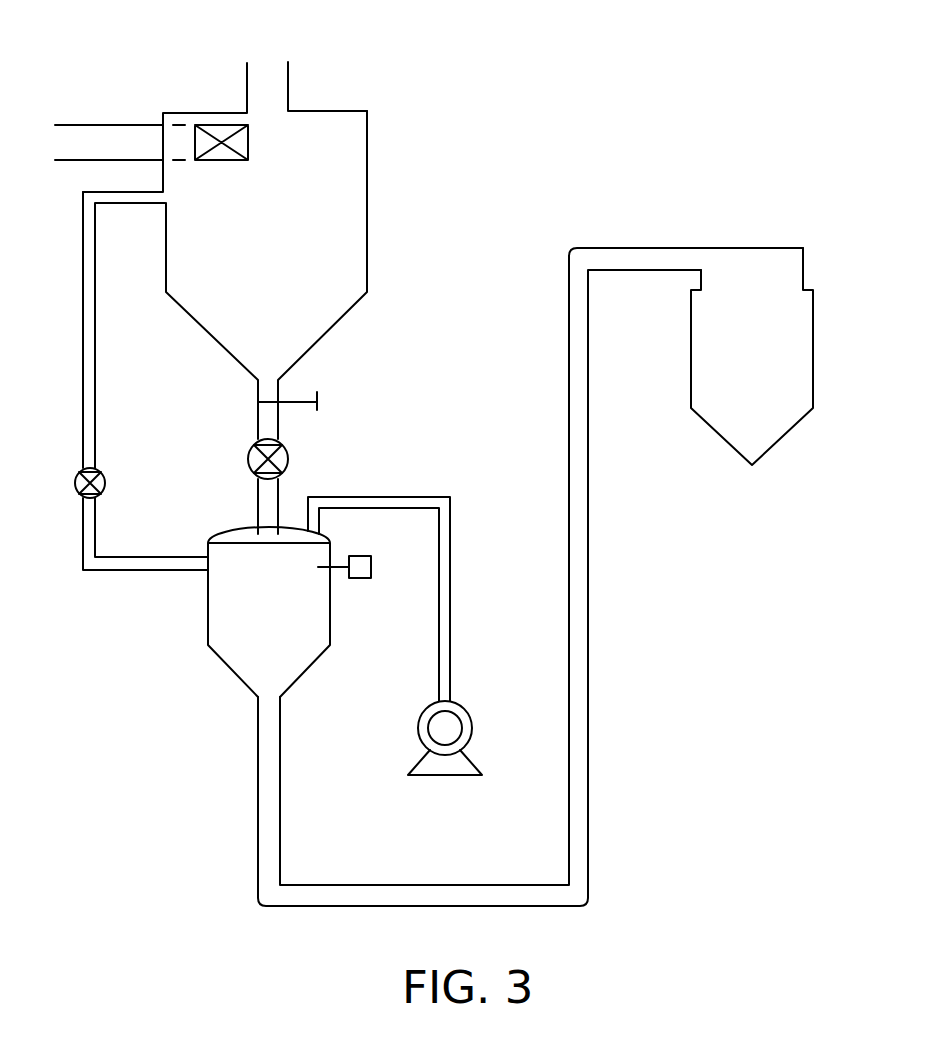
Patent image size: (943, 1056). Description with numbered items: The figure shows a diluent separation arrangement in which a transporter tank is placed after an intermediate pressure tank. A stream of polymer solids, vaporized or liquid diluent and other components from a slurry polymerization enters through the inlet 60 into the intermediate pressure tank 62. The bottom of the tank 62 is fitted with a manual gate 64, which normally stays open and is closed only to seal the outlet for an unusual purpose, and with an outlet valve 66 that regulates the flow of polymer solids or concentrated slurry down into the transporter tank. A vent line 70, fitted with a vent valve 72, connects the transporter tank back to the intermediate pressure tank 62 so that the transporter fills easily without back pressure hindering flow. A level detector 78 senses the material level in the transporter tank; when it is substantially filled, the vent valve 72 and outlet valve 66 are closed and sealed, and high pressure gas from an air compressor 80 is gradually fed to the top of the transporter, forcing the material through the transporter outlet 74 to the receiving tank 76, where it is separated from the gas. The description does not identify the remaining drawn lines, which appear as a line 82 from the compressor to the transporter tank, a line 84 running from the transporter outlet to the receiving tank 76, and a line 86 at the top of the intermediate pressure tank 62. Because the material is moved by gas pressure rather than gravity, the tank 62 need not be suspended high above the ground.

The inlet 60 is at (112, 124).
The intermediate pressure tank 62 is at (367, 207).
The manual gate 64 is at (317, 395).
The outlet valve 66 is at (250, 452).
The vent line 70 is at (83, 312).
The vent valve 72 is at (73, 480).
The transporter outlet 74 is at (255, 707).
The receiving tank 76 is at (813, 323).
The level detector 78 is at (360, 578).
The air compressor 80 is at (420, 723).
The gas line 82 is at (450, 575).
The transfer line 84 is at (590, 662).
The vent line 86 is at (288, 83).